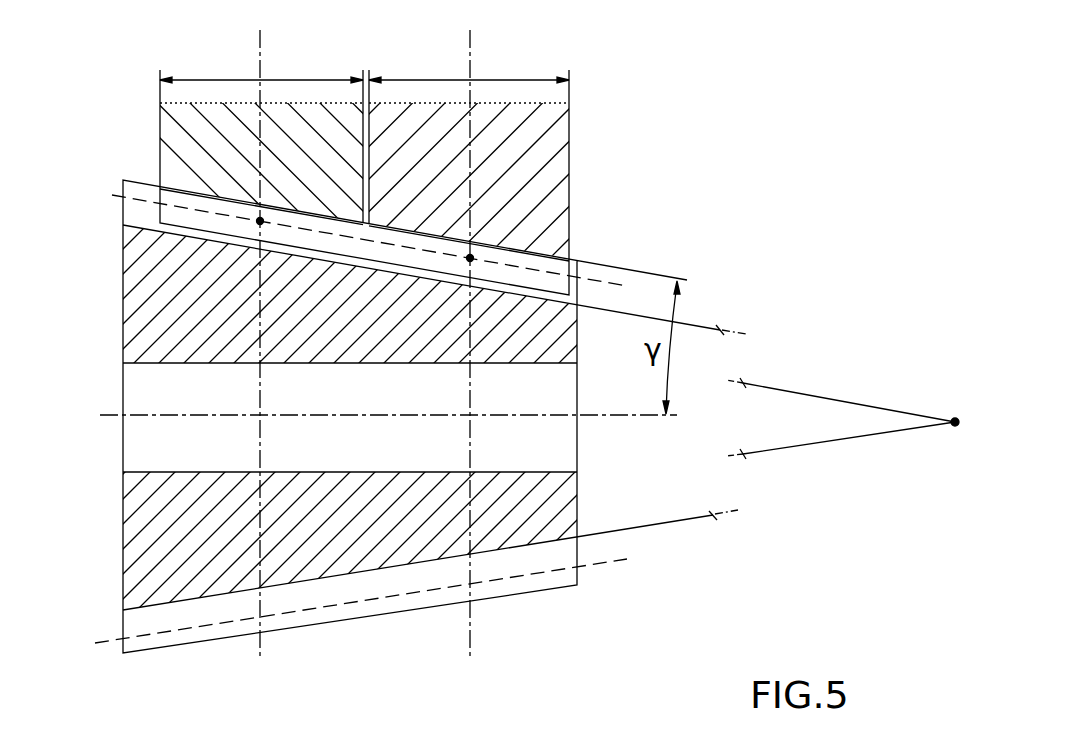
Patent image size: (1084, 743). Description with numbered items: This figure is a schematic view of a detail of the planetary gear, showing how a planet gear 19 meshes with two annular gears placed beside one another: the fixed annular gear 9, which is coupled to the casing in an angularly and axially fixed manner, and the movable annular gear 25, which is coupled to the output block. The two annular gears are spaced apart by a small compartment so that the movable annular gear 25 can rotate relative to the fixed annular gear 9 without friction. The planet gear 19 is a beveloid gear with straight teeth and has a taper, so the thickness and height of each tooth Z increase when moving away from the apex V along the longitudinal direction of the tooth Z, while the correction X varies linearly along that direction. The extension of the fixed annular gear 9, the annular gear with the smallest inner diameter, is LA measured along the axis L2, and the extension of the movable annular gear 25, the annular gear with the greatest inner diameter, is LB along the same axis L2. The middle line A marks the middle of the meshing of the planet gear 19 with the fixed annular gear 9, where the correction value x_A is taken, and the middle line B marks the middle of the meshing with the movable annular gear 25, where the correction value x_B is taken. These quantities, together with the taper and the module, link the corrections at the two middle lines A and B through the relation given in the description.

The movable annular gear 25 is at (175, 150).
The fixed annular gear 9 is at (563, 165).
The planet gear 19 is at (563, 496).
The tooth Z is at (130, 285).
The correction X is at (114, 196).
The axis L2 is at (150, 415).
The apex V is at (842, 418).
The extension of the annular gear with the smallest inner diameter LA is at (505, 78).
The extension of the annular gear with the greatest inner diameter LB is at (207, 78).
The middle line A is at (469, 337).
The middle line B is at (261, 337).